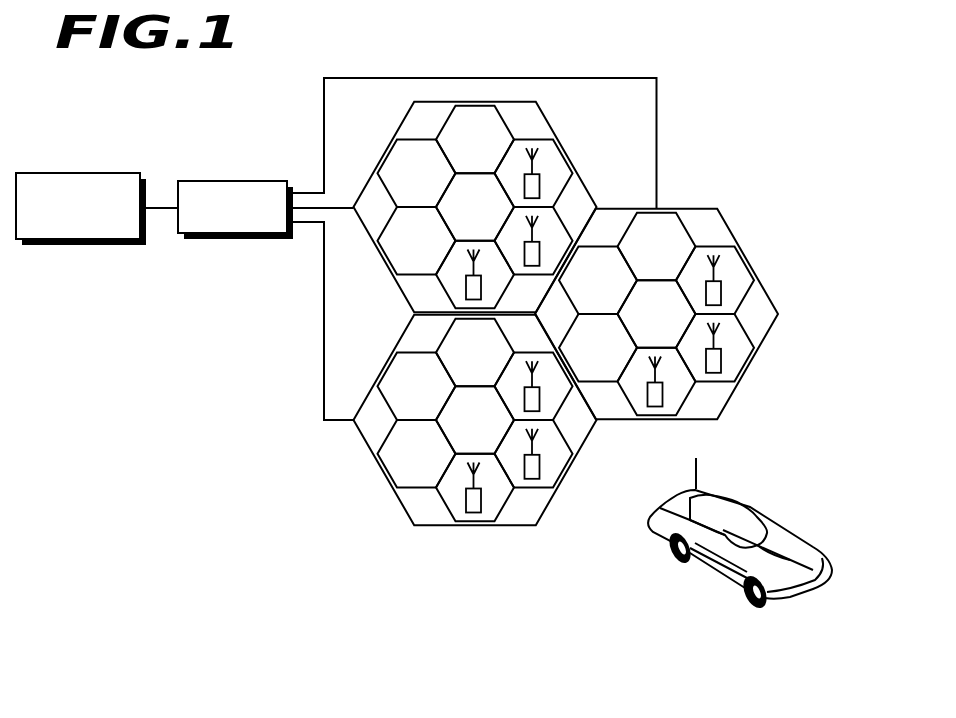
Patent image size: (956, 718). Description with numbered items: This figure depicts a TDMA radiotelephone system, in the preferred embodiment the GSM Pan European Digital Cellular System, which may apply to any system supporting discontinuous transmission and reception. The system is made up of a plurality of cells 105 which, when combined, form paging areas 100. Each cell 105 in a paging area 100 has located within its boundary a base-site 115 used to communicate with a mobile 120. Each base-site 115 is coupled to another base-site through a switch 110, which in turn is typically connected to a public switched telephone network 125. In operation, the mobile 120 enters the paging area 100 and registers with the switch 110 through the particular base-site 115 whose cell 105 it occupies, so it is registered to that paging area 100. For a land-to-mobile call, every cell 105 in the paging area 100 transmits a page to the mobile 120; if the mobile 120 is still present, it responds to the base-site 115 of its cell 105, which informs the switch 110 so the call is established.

The paging area 100 is at (752, 360).
The cell 105 is at (413, 491).
The switch 110 is at (233, 181).
The base-site 115 is at (542, 461).
The mobile 120 is at (733, 507).
The public switched telephone network (PSTN) 125 is at (76, 173).